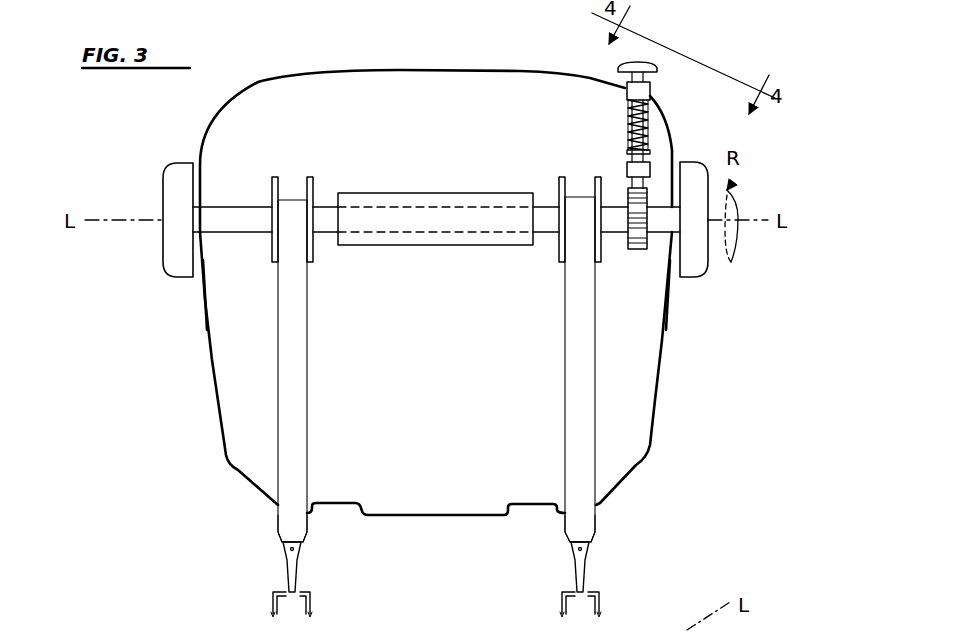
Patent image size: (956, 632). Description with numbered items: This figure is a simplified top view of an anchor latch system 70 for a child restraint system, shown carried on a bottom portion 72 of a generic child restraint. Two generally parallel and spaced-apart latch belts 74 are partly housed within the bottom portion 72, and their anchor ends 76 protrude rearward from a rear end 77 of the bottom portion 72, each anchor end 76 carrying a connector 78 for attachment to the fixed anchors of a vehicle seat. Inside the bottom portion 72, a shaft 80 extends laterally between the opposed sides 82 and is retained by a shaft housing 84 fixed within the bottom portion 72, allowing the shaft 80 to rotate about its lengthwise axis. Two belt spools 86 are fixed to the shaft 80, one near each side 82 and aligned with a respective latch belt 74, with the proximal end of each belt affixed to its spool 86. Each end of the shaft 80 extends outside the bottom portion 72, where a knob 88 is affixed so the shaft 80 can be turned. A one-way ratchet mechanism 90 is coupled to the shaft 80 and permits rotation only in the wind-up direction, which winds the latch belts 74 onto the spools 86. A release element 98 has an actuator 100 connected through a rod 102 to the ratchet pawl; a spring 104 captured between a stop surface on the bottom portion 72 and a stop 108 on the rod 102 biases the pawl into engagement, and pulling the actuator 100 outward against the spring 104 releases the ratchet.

The anchor latch system 70 is at (434, 170).
The bottom portion 72 is at (664, 441).
The latch belts 74 is at (297, 383).
The anchor ends 76 is at (274, 537).
The rear end 77 is at (437, 517).
The connector 78 is at (291, 563).
The shaft 80 is at (251, 212).
The sides 82 is at (207, 297).
The shaft housing 84 is at (497, 191).
The belt spools 86 is at (271, 251).
The knob 88 is at (174, 248).
The one-way ratchet mechanism 90 is at (663, 171).
The release element 98 is at (657, 91).
The actuator 100 is at (634, 66).
The rod 102 is at (626, 83).
The spring 104 is at (650, 126).
The stop 108 is at (633, 151).